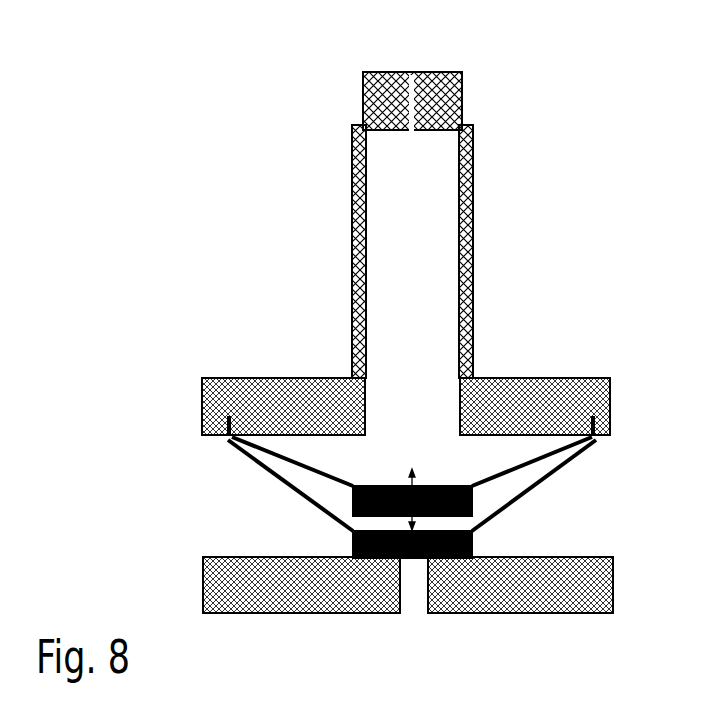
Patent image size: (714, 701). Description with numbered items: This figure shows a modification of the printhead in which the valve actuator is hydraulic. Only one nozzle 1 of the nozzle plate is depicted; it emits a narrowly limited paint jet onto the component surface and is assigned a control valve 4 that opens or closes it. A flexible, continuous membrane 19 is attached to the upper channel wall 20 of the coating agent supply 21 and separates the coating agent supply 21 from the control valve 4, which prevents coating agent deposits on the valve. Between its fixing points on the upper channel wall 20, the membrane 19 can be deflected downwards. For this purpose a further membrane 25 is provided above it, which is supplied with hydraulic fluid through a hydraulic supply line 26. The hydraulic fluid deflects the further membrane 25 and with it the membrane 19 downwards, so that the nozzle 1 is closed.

The nozzle 1 is at (412, 598).
The control valve 4 is at (284, 280).
The membrane 19 is at (562, 471).
The upper channel wall 20 is at (272, 414).
The coating agent supply 21 is at (267, 531).
The further membrane 25 is at (497, 481).
The hydraulic supply line 26 is at (413, 73).